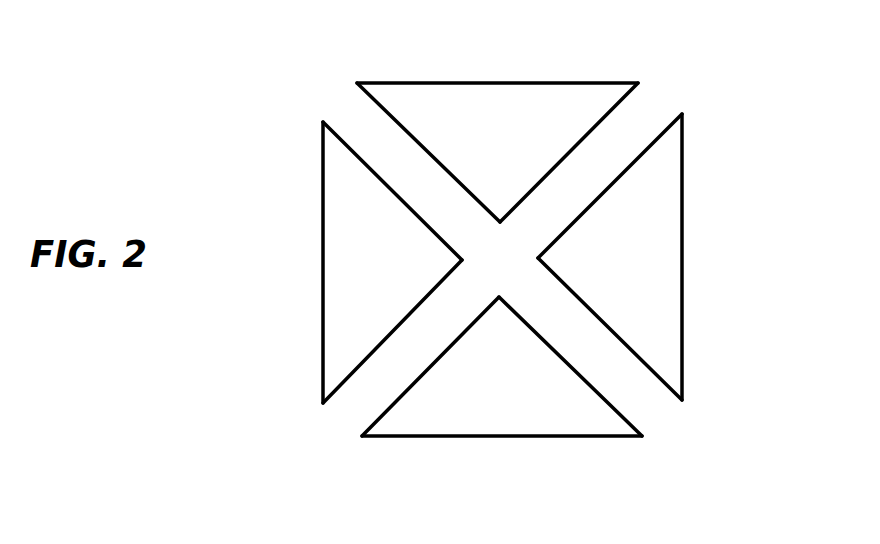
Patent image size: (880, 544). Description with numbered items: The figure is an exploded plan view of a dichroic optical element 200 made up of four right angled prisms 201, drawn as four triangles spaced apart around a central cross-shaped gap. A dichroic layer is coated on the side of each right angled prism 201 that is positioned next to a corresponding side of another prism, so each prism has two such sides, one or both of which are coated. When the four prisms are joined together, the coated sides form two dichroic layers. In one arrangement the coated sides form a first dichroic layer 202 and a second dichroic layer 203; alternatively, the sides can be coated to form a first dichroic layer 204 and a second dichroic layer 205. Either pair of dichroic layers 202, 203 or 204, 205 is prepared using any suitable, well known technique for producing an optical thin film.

The dichroic optical element 200 is at (276, 403).
The right angled prism 201 is at (682, 268).
The first dichroic layer 202 is at (640, 155).
The second dichroic layer 203 is at (380, 182).
The first dichroic layer 204 is at (612, 106).
The second dichroic layer 205 is at (418, 217).